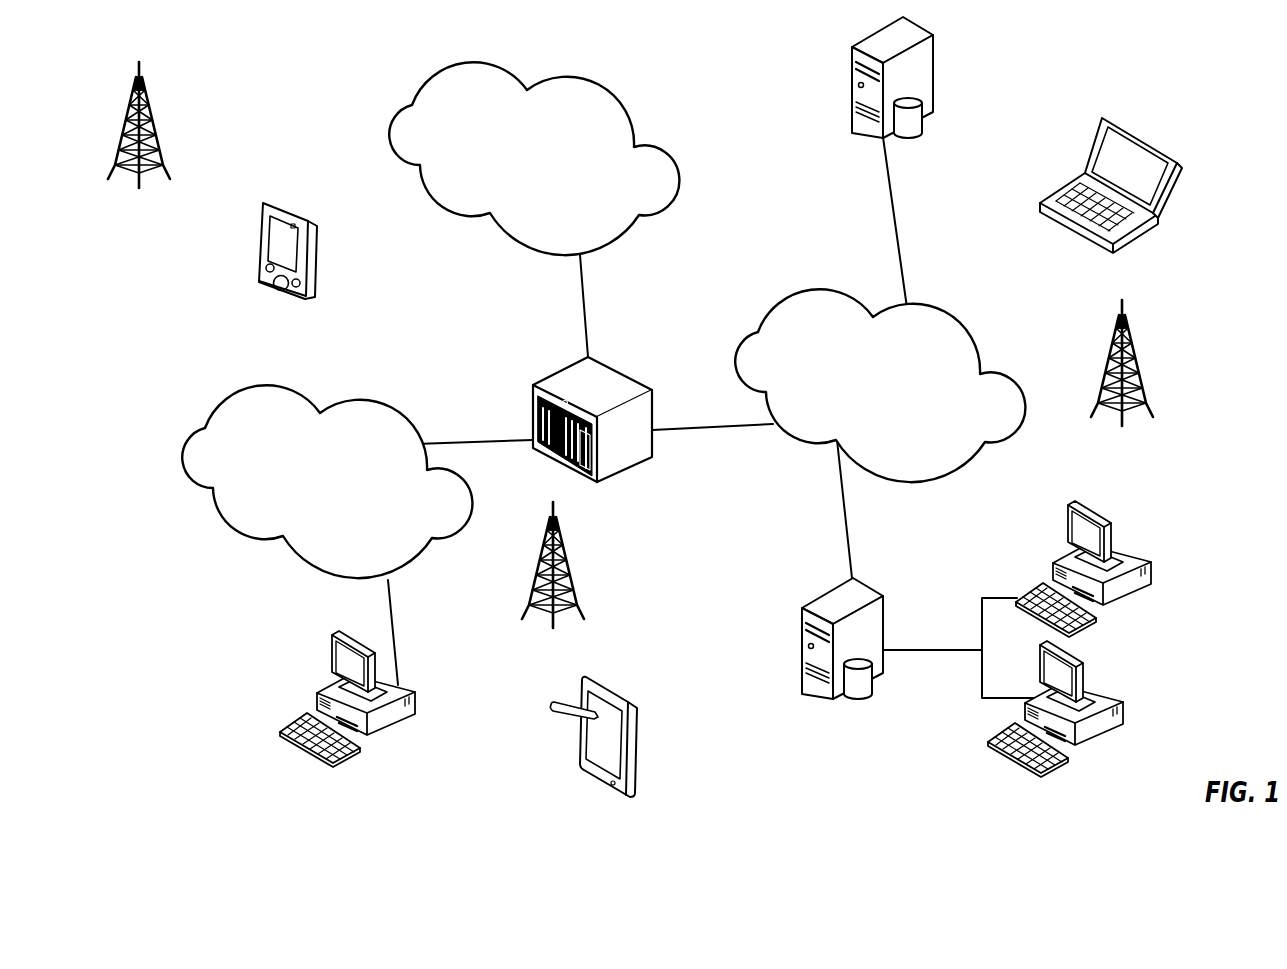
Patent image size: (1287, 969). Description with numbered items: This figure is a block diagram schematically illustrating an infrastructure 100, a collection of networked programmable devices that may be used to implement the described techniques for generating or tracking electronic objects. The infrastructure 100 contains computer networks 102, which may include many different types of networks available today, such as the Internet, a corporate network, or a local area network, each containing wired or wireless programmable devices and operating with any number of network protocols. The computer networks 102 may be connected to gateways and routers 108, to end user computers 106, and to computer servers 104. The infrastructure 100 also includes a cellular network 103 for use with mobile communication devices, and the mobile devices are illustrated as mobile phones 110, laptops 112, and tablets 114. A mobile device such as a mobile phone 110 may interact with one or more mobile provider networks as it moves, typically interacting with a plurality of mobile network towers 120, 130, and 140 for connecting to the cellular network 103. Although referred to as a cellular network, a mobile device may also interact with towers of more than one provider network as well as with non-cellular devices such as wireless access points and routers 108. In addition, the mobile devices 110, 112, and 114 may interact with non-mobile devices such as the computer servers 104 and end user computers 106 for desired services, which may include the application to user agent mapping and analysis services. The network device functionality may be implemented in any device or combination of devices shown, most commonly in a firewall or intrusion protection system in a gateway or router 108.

The infrastructure 100 is at (1018, 113).
The computer networks 102 is at (307, 398).
The cellular network 103 is at (577, 93).
The computer servers 104 is at (852, 67).
The end user computers 106 is at (412, 692).
The gateways and routers 108 is at (615, 370).
The mobile phones 110 is at (293, 207).
The laptops 112 is at (1152, 140).
The tablets 114 is at (622, 692).
The mobile network tower 120 is at (553, 580).
The mobile network tower 130 is at (1122, 379).
The mobile network tower 140 is at (139, 140).